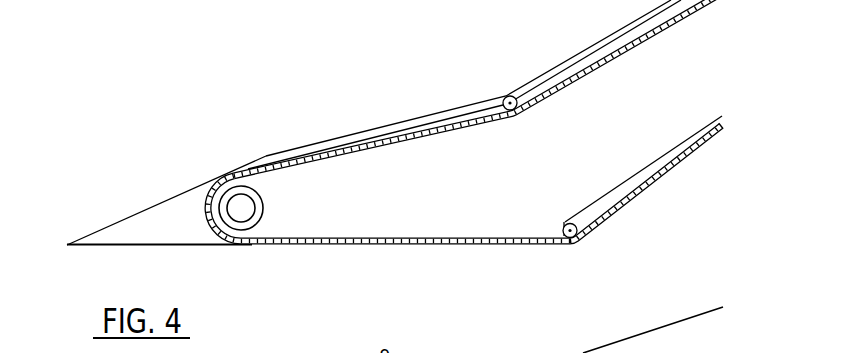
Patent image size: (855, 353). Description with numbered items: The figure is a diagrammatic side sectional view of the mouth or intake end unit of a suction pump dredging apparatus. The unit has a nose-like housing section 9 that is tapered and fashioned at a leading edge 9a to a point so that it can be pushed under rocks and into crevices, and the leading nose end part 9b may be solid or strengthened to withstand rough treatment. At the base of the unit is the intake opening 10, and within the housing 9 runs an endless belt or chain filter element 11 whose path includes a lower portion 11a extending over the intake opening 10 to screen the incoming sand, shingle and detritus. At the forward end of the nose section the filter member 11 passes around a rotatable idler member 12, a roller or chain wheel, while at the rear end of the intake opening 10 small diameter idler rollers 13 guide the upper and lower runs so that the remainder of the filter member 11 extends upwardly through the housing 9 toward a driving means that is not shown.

The nose-like housing section 9 is at (375, 128).
The leading edge 9a is at (68, 250).
The leading nose end part 9b is at (173, 215).
The intake opening 10 is at (386, 250).
The endless belt or chain filter element 11 is at (586, 78).
The lower portion of filter member 11a is at (484, 248).
The rotatable idler member 12 is at (270, 240).
The small diameter idler rollers 13 is at (503, 101).